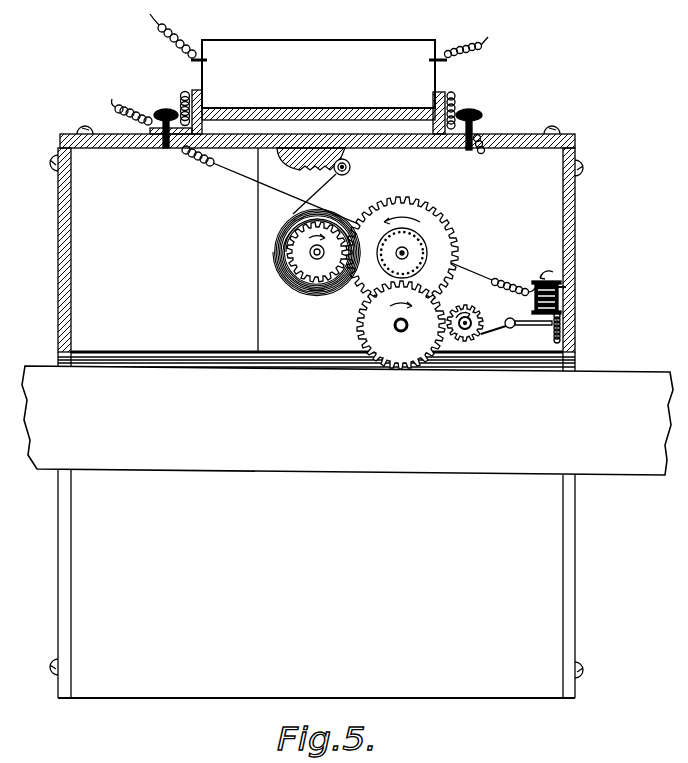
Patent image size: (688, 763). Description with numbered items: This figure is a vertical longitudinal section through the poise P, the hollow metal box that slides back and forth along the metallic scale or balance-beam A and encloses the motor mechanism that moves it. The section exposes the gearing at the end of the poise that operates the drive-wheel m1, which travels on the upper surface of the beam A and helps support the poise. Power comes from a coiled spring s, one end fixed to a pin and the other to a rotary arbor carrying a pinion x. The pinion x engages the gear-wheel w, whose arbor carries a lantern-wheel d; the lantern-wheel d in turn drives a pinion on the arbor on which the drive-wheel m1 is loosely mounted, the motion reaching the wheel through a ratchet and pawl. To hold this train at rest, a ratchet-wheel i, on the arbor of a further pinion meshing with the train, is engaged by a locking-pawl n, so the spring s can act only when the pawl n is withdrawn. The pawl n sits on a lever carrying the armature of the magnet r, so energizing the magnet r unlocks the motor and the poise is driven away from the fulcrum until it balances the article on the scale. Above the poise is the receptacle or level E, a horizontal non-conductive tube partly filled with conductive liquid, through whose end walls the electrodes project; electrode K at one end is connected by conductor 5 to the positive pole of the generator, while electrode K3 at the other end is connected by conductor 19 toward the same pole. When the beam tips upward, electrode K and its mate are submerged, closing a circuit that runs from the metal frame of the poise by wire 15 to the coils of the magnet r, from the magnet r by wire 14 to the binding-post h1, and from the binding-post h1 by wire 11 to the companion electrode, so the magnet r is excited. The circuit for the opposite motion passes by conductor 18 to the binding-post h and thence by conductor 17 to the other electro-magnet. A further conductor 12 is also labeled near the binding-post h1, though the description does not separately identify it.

The balance-beam A is at (347, 420).
The poise P is at (317, 584).
The receptacle or level E is at (318, 87).
The electrode K is at (209, 61).
The electrode K3 is at (428, 59).
The electric conductor 5 is at (173, 34).
The conductor 19 is at (475, 47).
The conductor wire 12 is at (131, 113).
The wire 11 is at (181, 103).
The conductor 18 is at (460, 105).
The conductor 17 is at (487, 154).
The binding-post h1 is at (158, 107).
The binding-post h is at (483, 112).
The wire 14 is at (358, 221).
The gear-wheel w is at (402, 253).
The lantern-wheel d is at (402, 253).
The pinion x is at (317, 252).
The coiled spring s is at (290, 222).
The drive-wheel m1 is at (401, 325).
The ratchet-wheel i is at (465, 330).
The locking-pawl n is at (516, 332).
The magnet r is at (549, 290).
The wire 15 is at (549, 332).